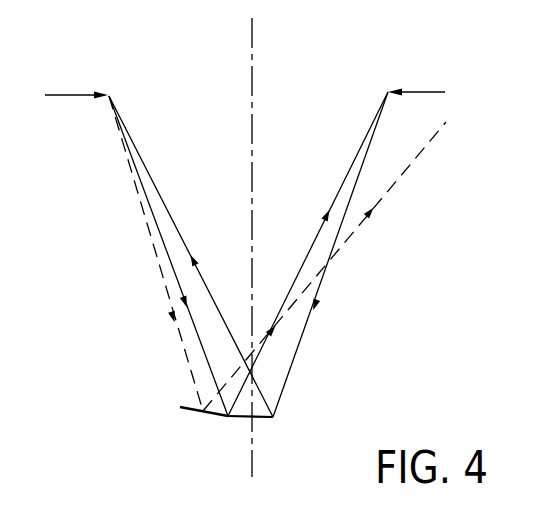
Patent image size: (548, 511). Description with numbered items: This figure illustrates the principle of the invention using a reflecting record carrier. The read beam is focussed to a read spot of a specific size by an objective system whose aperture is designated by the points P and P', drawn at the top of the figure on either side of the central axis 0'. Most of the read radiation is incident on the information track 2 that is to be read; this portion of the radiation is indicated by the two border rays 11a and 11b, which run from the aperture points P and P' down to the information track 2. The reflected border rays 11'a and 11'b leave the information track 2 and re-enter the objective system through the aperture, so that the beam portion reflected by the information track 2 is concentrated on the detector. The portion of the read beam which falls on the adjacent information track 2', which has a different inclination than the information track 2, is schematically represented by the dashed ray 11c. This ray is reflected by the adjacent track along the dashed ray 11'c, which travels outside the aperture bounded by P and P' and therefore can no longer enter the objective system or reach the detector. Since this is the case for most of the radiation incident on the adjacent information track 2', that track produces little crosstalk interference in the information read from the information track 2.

The information track 2 is at (260, 436).
The adjacent information track 2' is at (204, 433).
The border ray 11a is at (197, 336).
The border ray 11b is at (312, 319).
The ray 11c is at (166, 291).
The reflected border ray 11'a is at (308, 254).
The reflected border ray 11'b is at (191, 256).
The reflected ray 11'c is at (324, 266).
The aperture boundary point P is at (76, 83).
The aperture boundary point P' is at (416, 80).
The optical axis 0' is at (265, 250).